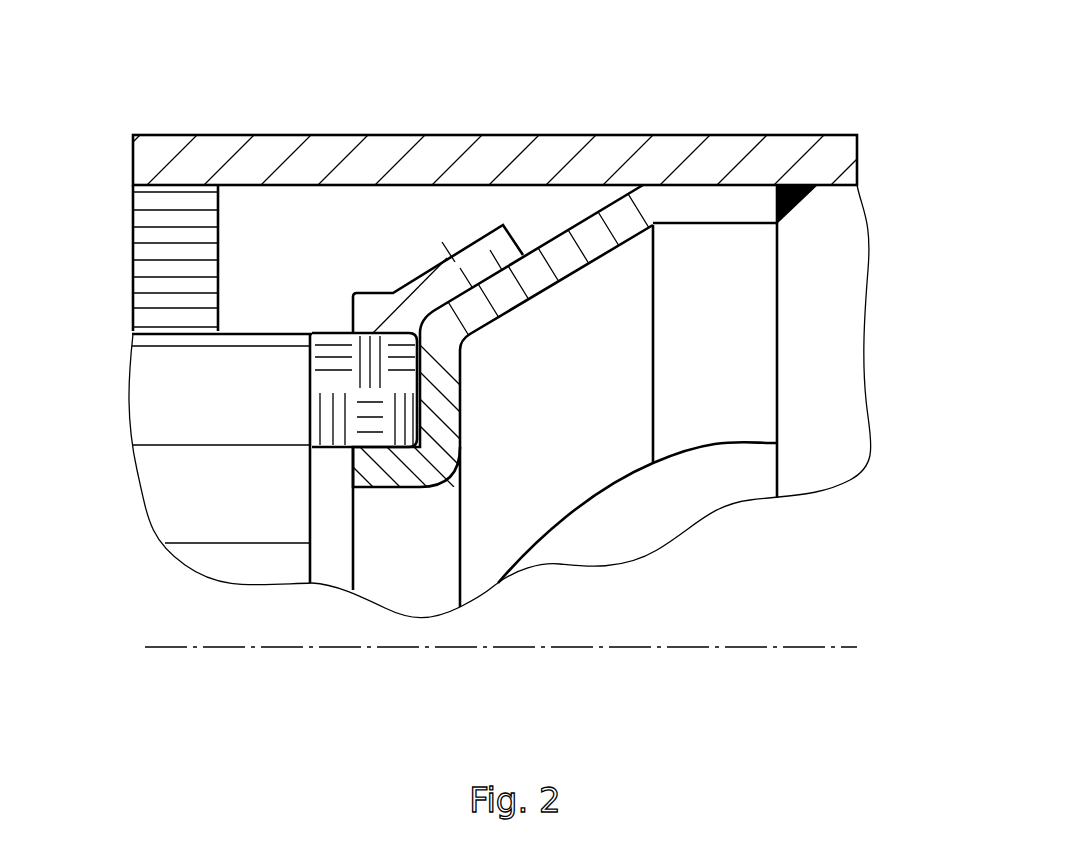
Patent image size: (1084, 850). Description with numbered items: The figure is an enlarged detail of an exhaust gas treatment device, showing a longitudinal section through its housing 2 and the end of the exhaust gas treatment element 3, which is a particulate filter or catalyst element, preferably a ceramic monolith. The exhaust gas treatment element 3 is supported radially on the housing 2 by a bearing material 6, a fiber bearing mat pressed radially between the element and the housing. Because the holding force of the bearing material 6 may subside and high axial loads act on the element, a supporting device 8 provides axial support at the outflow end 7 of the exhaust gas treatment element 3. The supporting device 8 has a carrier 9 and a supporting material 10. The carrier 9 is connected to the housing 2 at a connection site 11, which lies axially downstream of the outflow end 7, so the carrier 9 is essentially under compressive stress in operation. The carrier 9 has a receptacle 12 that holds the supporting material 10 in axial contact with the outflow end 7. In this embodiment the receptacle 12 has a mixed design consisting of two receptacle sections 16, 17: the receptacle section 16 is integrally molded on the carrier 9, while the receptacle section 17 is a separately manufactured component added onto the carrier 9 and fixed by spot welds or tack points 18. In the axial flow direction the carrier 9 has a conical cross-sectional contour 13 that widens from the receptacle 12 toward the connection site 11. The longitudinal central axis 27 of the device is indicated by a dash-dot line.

The housing 2 is at (248, 134).
The exhaust gas treatment element 3 is at (500, 401).
The bearing material 6 is at (150, 265).
The outflow end 7 is at (314, 560).
The supporting device 8 is at (436, 276).
The carrier 9 is at (537, 229).
The supporting material 10 is at (237, 337).
The connection site 11 is at (812, 196).
The receptacle 12 is at (417, 389).
The cross-sectional contour 13 is at (580, 258).
The receptacle section 16 is at (422, 366).
The receptacle section 17 is at (424, 282).
The tack points 18 is at (500, 322).
The longitudinal central axis 27 is at (313, 658).